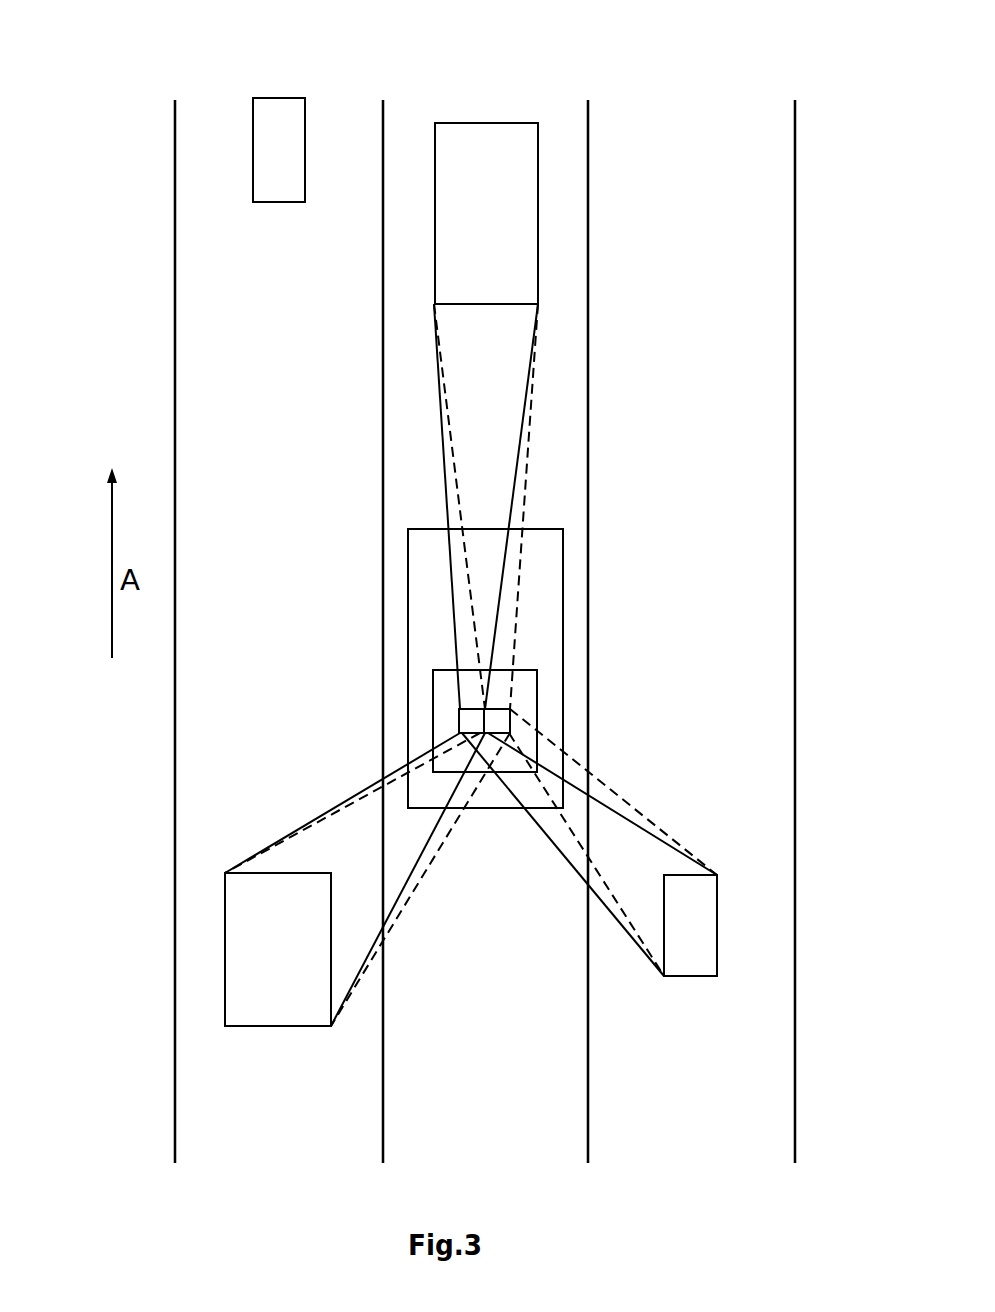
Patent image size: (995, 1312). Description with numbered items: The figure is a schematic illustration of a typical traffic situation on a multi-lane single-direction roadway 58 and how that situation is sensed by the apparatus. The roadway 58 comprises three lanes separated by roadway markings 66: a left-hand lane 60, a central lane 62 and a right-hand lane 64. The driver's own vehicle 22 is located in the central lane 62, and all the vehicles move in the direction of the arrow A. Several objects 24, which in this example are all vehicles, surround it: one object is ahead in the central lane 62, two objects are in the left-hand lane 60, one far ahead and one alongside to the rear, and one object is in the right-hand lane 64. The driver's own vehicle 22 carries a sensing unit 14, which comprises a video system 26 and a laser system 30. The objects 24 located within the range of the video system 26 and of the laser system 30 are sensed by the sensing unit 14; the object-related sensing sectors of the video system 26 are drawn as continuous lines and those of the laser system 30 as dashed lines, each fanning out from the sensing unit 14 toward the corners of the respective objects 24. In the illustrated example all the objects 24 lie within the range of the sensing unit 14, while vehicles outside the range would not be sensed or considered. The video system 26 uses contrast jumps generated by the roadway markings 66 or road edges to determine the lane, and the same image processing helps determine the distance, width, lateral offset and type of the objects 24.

The multi-lane single-direction roadway 58 is at (130, 89).
The roadway markings 66 is at (172, 1077).
The left-hand lane 60 is at (287, 1120).
The central lane 62 is at (522, 1120).
The right-hand lane 64 is at (692, 1120).
The object 24 is at (253, 98).
The driver's own vehicle 22 is at (565, 570).
The sensing unit 14 is at (538, 707).
The video system 26 is at (459, 722).
The laser system 30 is at (512, 722).